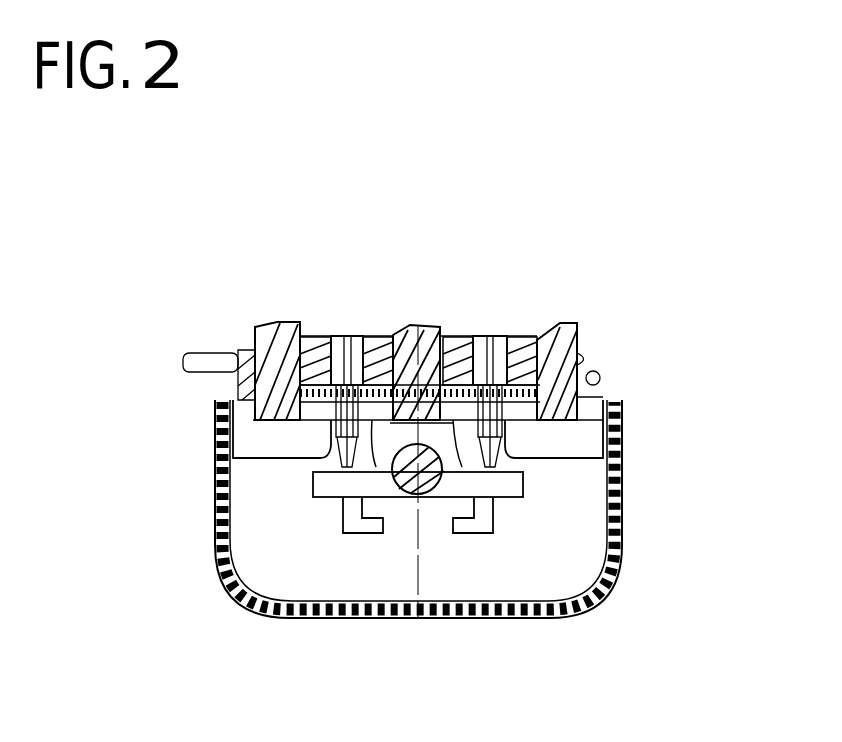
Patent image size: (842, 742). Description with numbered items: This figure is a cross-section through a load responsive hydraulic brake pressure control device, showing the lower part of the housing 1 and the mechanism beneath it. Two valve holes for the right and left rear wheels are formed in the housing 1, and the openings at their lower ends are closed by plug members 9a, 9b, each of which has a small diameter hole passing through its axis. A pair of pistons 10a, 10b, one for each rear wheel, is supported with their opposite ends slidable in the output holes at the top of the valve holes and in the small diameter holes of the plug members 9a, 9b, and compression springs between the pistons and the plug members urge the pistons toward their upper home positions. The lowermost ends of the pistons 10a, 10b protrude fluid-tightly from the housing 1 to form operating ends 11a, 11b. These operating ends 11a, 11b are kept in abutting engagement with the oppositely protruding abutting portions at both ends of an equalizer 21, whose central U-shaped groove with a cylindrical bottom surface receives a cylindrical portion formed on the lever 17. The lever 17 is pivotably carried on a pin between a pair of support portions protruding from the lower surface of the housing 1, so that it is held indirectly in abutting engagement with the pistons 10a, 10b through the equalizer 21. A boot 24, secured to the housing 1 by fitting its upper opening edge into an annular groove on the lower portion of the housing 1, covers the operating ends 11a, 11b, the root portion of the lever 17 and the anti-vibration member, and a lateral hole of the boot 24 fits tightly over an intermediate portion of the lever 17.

The housing 1 is at (256, 334).
The plug member 9a is at (524, 345).
The plug member 9b is at (320, 345).
The piston 10a is at (488, 336).
The piston 10b is at (352, 336).
The operating end 11a is at (600, 456).
The operating end 11b is at (300, 456).
The lever 17 is at (398, 490).
The equalizer 21 is at (525, 492).
The boot 24 is at (541, 618).